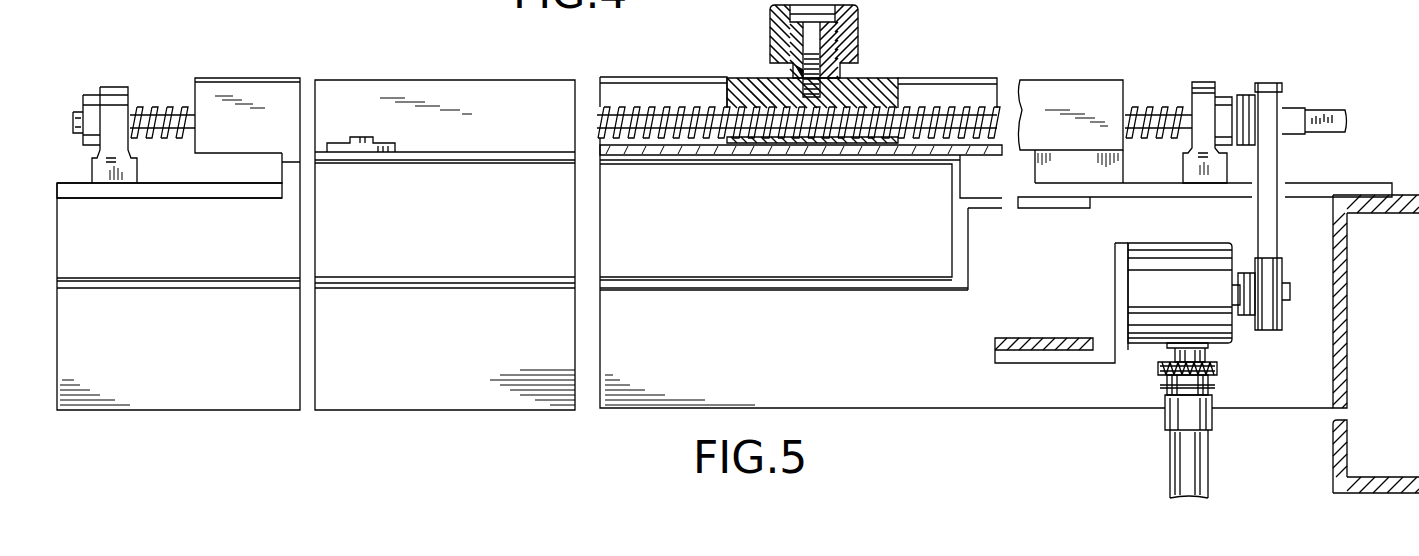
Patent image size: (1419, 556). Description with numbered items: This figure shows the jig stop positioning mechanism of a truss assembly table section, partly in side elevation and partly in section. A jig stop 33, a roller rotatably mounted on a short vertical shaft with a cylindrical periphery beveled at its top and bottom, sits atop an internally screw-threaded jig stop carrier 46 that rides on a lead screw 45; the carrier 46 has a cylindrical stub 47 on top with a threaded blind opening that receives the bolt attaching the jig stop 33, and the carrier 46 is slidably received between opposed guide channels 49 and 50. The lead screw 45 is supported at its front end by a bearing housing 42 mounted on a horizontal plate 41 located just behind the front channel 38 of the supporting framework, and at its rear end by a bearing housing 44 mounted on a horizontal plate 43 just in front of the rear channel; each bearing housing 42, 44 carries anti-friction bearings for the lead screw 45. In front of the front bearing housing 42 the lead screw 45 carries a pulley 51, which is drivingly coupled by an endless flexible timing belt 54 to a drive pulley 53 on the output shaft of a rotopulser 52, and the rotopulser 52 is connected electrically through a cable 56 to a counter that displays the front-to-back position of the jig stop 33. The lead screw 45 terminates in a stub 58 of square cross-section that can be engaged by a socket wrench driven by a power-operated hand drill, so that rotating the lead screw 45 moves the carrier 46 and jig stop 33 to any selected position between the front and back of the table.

The jig stop 33 is at (848, 22).
The front channel 38 is at (1348, 330).
The horizontal plate 41 is at (1325, 190).
The bearing housing 42 is at (1198, 82).
The horizontal plate 43 is at (138, 190).
The bearing housing 44 is at (113, 87).
The lead screw 45 is at (1150, 107).
The jig stop carrier 46 is at (875, 83).
The cylindrical stub 47 is at (793, 72).
The guide channel 49 is at (1045, 90).
The guide channel 50 is at (950, 85).
The pulley 51 is at (1280, 100).
The rotopulser 52 is at (1153, 253).
The drive pulley 53 is at (1280, 322).
The endless flexible timing belt 54 is at (1270, 232).
The cable 56 is at (1183, 452).
The stub 58 is at (1328, 112).